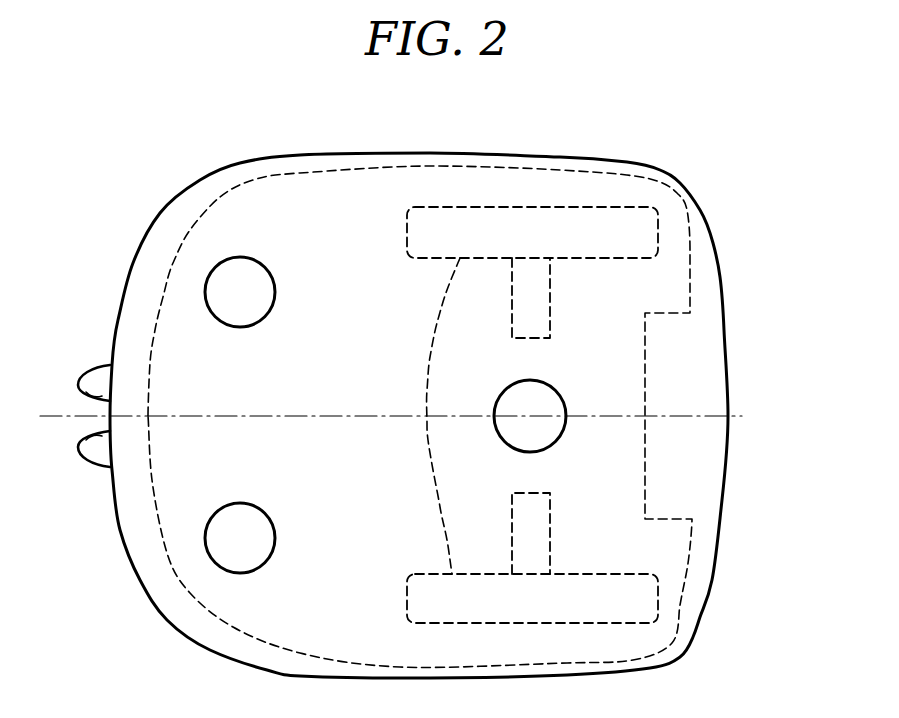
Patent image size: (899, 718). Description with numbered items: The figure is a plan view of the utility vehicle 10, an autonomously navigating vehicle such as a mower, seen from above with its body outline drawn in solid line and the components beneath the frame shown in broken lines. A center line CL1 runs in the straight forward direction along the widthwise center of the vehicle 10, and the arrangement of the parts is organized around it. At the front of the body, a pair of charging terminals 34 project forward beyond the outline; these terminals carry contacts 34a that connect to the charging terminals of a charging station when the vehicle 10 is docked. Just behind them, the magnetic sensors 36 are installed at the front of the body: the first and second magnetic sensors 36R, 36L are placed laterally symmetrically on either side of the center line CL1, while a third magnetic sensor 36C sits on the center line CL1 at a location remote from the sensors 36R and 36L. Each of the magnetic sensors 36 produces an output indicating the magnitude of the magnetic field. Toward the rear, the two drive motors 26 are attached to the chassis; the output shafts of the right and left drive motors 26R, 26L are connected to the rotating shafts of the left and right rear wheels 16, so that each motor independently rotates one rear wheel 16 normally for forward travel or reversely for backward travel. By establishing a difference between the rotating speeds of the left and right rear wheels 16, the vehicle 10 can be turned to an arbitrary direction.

The utility vehicle 10 is at (656, 151).
The rear wheels 16 is at (437, 416).
The drive motors 26 is at (625, 415).
The right drive motor 26R is at (550, 285).
The left drive motor 26L is at (550, 518).
The charging terminals 34 is at (82, 383).
The contacts 34a is at (88, 439).
The magnetic sensors 36 is at (225, 415).
The first magnetic sensor 36R is at (240, 327).
The second magnetic sensor 36L is at (240, 503).
The third magnetic sensor 36C is at (563, 397).
The center line CL1 is at (413, 417).